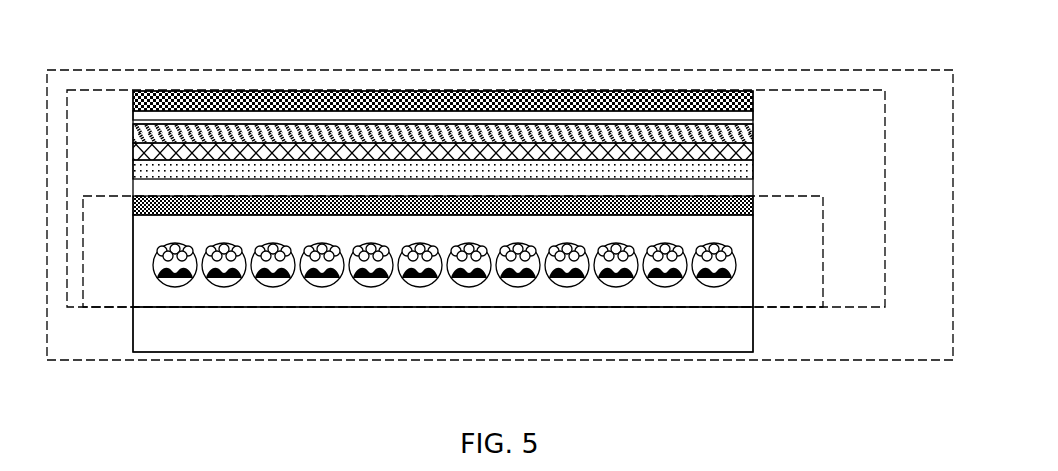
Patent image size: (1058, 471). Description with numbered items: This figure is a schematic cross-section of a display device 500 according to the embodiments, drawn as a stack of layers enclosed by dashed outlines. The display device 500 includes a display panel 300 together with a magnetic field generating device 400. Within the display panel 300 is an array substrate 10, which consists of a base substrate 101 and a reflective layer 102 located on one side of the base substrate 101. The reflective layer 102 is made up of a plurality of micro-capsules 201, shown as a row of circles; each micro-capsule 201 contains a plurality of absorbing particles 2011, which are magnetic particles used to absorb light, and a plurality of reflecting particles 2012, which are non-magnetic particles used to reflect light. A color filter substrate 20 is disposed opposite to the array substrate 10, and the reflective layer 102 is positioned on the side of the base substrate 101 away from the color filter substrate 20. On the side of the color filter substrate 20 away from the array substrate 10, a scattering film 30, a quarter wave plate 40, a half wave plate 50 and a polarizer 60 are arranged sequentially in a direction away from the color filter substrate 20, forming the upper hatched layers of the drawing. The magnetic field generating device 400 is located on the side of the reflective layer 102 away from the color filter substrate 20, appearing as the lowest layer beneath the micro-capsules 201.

The display device 500 is at (777, 70).
The display panel 300 is at (893, 189).
The array substrate 10 is at (823, 275).
The polarizer 60 is at (753, 98).
The half wave plate 50 is at (753, 118).
The quarter wave plate 40 is at (753, 137).
The scattering film 30 is at (753, 154).
The color filter substrate 20 is at (753, 170).
The base substrate 101 is at (753, 207).
The reflective layer 102 is at (470, 261).
The micro-capsule 201 is at (158, 257).
The reflecting particles 2012 is at (292, 254).
The absorbing particles 2011 is at (241, 278).
The magnetic field generating device 400 is at (753, 340).